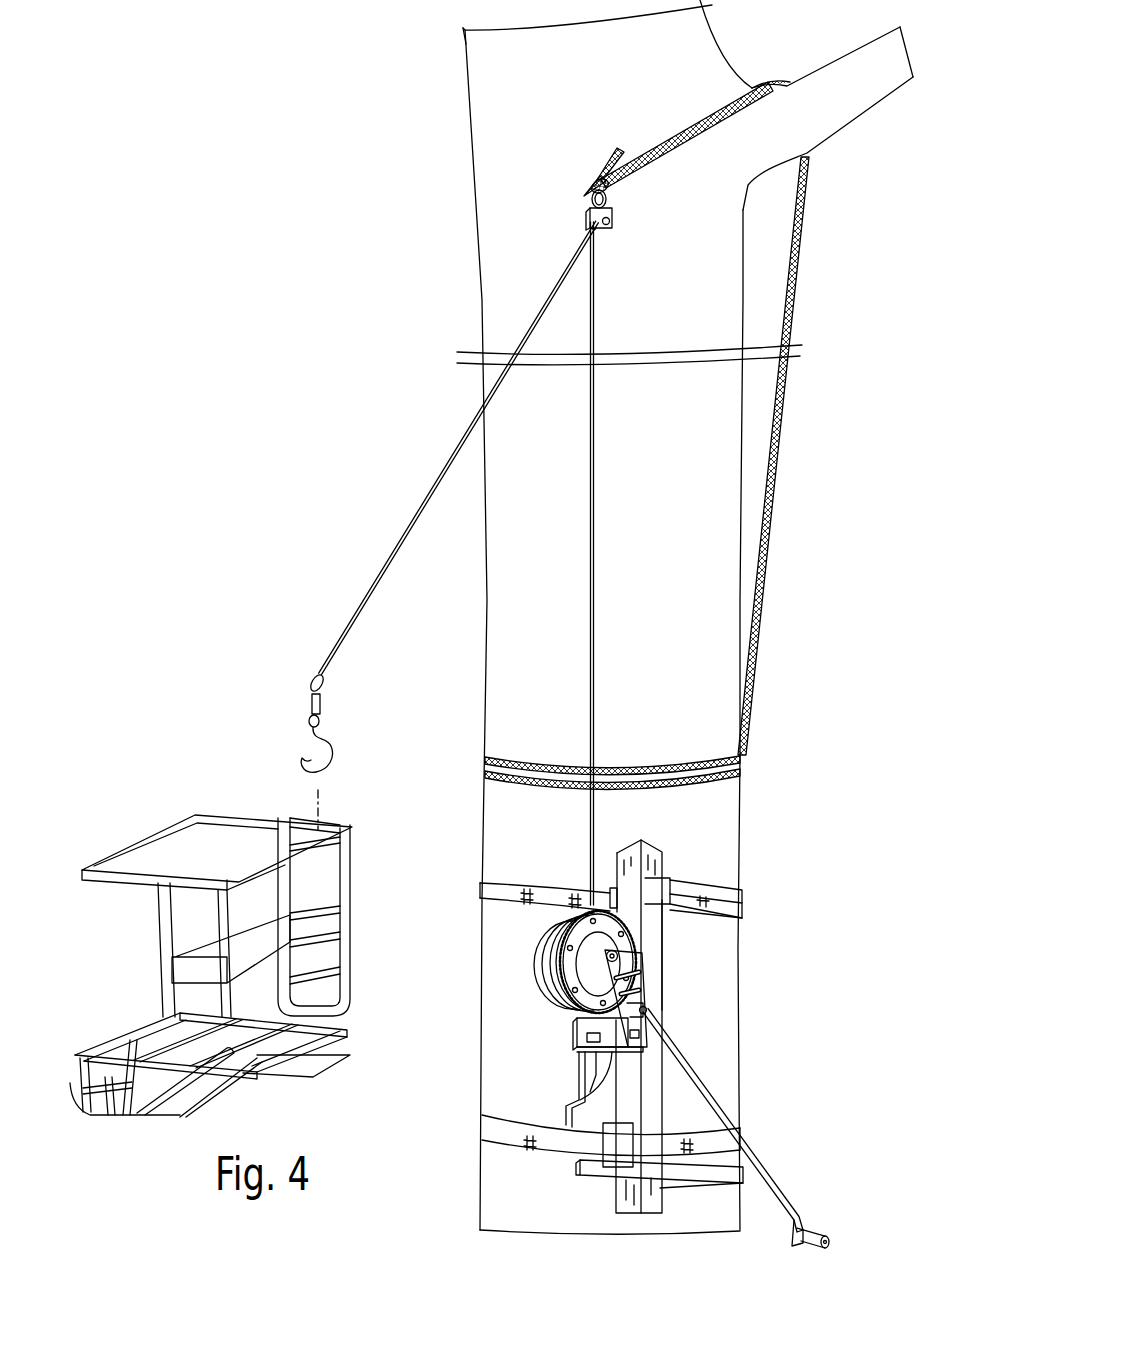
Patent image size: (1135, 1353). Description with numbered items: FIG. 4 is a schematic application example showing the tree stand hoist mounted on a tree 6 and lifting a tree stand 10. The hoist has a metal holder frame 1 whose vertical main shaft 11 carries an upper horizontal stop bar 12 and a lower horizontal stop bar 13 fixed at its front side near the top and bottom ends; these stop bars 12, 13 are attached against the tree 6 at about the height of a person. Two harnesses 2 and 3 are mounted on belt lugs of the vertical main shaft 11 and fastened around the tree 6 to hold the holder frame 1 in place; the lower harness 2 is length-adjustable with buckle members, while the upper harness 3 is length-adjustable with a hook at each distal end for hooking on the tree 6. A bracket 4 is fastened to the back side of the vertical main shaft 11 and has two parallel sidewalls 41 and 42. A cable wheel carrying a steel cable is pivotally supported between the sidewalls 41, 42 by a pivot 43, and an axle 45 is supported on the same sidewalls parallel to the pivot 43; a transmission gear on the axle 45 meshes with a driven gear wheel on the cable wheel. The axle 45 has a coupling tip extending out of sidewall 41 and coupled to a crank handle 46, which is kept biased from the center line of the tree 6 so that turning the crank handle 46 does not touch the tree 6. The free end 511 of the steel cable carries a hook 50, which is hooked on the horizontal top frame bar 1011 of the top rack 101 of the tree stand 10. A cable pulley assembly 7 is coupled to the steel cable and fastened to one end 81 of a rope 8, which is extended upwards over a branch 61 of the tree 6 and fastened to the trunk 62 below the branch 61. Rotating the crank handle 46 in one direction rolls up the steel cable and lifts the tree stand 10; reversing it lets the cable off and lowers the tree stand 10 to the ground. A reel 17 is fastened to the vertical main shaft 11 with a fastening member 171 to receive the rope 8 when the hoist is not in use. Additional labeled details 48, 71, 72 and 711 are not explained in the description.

The holder frame 1 is at (691, 1009).
The harness 2 is at (510, 1150).
The harness 3 is at (513, 870).
The bracket 4 is at (710, 996).
The tree 6 is at (462, 206).
The cable pulley assembly 7 is at (615, 200).
The rope 8 is at (700, 100).
The tree stand 10 is at (256, 966).
The vertical main shaft 11 is at (665, 955).
The horizontal stop bar 12 is at (660, 893).
The horizontal stop bar 13 is at (723, 1187).
The reel 17 is at (575, 1070).
The sidewall 41 is at (648, 993).
The sidewall 42 is at (578, 1024).
The pivot 43 is at (615, 953).
The axle 45 is at (610, 1030).
The crank handle 46 is at (712, 1100).
The cable guide 48 is at (617, 1040).
The hook 50 is at (295, 780).
The branch 61 is at (822, 105).
The trunk 62 is at (490, 755).
The pulley block 71 is at (615, 220).
The pulley wheel 72 is at (600, 232).
The end of rope 81 is at (601, 168).
The top rack 101 is at (353, 898).
The fastening member 171 is at (640, 988).
The end of steel cable 511 is at (390, 535).
The pulley ring 711 is at (592, 198).
The horizontal top frame bar 1011 is at (320, 863).